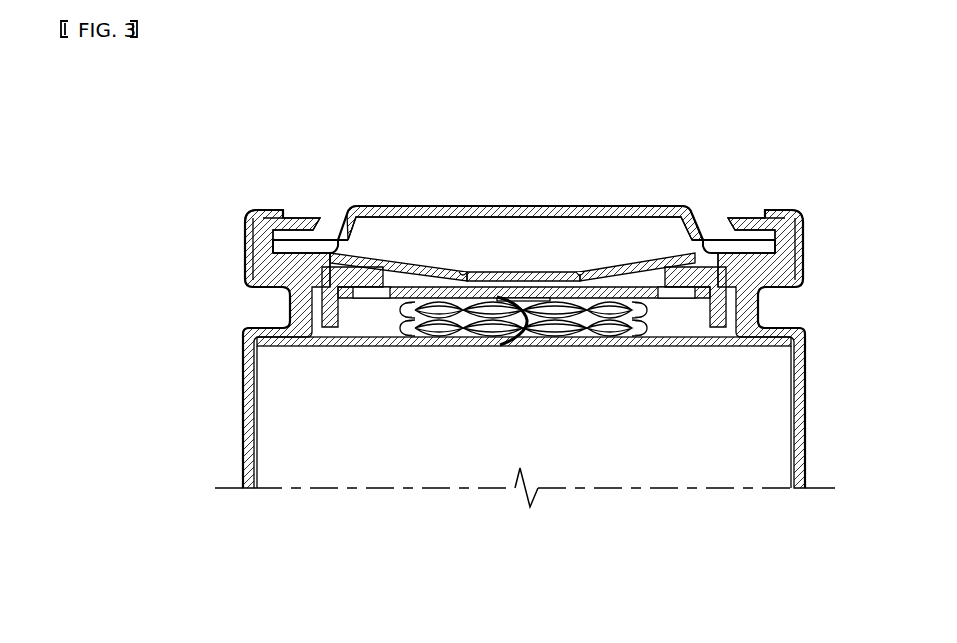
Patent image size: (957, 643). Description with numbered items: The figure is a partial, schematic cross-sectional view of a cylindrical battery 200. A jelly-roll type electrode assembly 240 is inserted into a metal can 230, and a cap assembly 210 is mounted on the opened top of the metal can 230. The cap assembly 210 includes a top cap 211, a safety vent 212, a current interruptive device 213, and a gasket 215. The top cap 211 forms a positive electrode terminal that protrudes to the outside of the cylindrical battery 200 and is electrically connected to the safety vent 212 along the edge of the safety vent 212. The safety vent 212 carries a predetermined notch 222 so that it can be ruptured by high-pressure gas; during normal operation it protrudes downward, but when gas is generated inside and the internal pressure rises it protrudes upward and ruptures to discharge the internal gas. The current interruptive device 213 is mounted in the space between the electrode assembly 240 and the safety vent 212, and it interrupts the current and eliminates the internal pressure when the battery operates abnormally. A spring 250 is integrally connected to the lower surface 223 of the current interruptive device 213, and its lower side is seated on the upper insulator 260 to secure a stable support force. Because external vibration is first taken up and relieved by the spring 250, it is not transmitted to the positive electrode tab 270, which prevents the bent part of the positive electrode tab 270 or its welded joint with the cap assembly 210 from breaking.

The cylindrical battery 200 is at (250, 88).
The cap assembly 210 is at (493, 188).
The top cap 211 is at (530, 206).
The safety vent 212 is at (622, 268).
The current interruptive device 213 is at (444, 290).
The gasket 215 is at (747, 220).
The notch 222 is at (578, 272).
The lower surface 223 is at (390, 257).
The metal can 230 is at (243, 403).
The electrode assembly 240 is at (283, 445).
The spring 250 is at (668, 318).
The upper insulator 260 is at (298, 346).
The positive electrode tab 270 is at (527, 348).